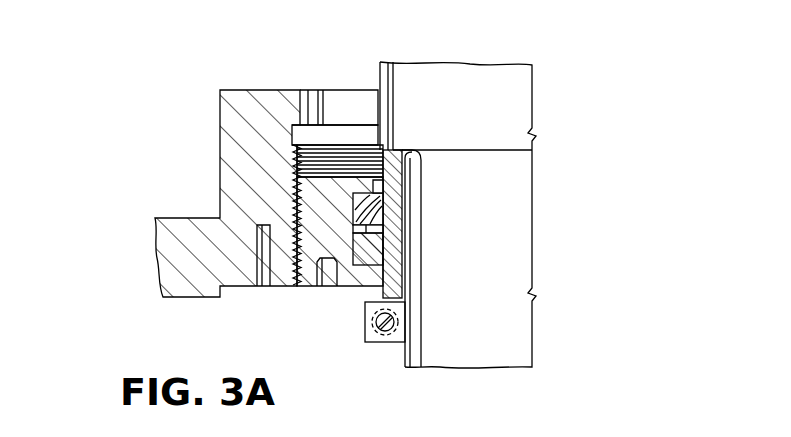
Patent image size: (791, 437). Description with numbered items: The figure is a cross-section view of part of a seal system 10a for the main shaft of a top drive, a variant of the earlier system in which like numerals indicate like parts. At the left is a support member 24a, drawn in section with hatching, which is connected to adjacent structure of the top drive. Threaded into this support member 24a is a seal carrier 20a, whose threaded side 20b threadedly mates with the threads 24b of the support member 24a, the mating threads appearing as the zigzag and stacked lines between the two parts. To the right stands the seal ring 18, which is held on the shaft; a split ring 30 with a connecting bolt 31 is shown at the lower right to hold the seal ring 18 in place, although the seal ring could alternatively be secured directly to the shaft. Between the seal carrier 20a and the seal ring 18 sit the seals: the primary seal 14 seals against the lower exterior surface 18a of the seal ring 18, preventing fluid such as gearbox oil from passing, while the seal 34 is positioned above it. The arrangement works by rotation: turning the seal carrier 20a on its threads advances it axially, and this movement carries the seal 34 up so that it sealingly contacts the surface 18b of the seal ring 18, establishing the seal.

The system 10a is at (325, 172).
The primary seal 14 is at (384, 254).
The seal ring 18 is at (400, 190).
The lower exterior surface 18a is at (396, 232).
The surface 18b is at (405, 162).
The seal carrier 20a is at (295, 205).
The threaded side 20b is at (300, 262).
The support member 24a is at (186, 290).
The threads 24b is at (295, 158).
The split ring 30 is at (404, 331).
The connecting bolt 31 is at (385, 333).
The seal 34 is at (384, 214).